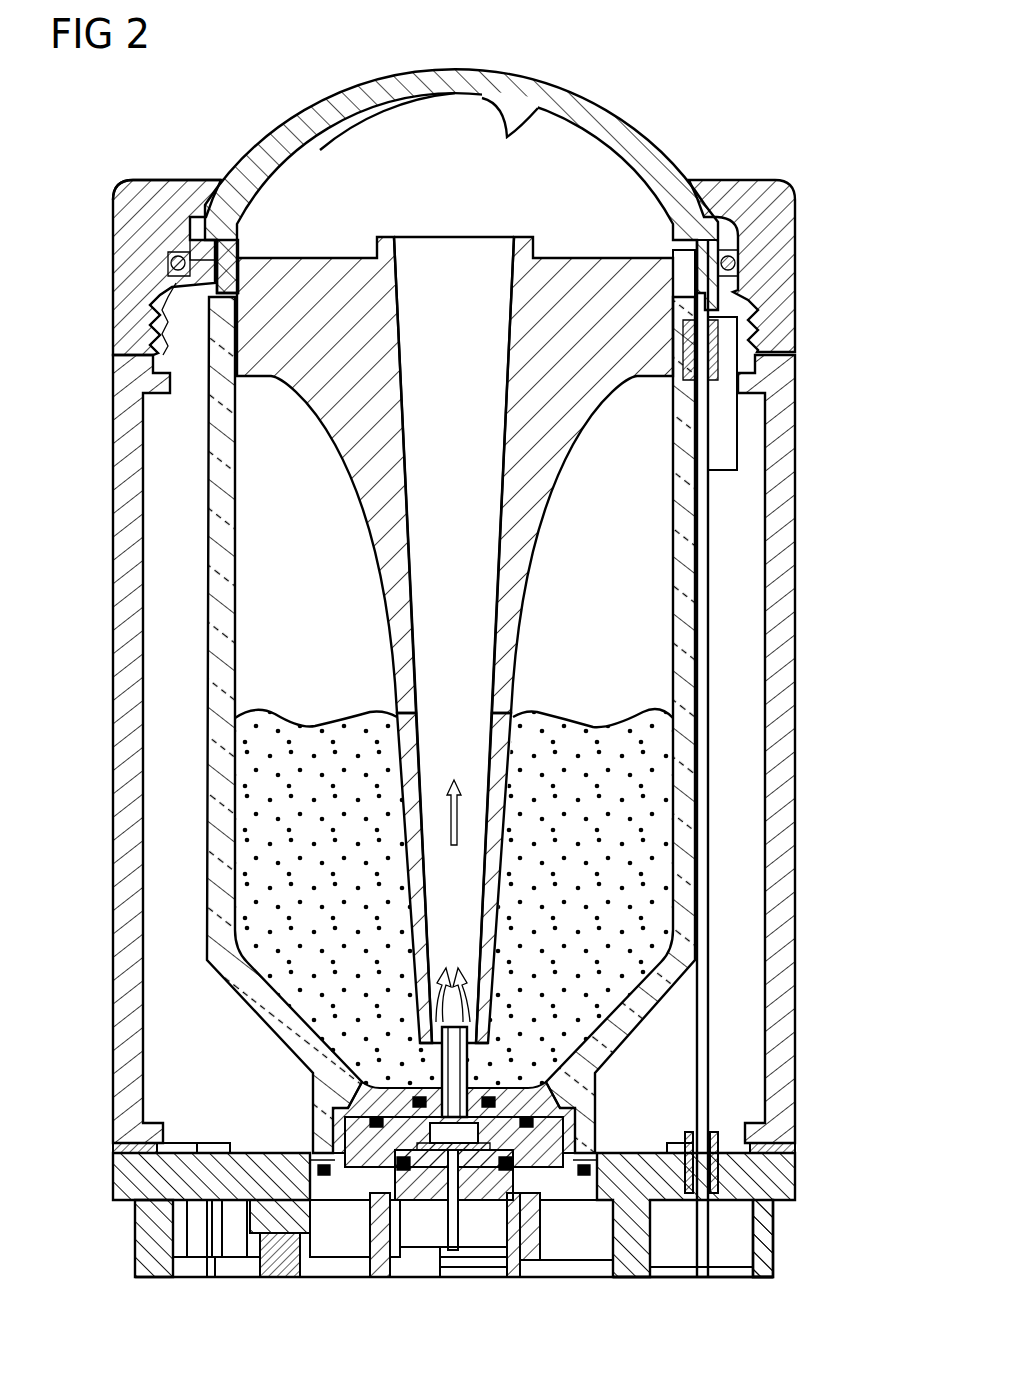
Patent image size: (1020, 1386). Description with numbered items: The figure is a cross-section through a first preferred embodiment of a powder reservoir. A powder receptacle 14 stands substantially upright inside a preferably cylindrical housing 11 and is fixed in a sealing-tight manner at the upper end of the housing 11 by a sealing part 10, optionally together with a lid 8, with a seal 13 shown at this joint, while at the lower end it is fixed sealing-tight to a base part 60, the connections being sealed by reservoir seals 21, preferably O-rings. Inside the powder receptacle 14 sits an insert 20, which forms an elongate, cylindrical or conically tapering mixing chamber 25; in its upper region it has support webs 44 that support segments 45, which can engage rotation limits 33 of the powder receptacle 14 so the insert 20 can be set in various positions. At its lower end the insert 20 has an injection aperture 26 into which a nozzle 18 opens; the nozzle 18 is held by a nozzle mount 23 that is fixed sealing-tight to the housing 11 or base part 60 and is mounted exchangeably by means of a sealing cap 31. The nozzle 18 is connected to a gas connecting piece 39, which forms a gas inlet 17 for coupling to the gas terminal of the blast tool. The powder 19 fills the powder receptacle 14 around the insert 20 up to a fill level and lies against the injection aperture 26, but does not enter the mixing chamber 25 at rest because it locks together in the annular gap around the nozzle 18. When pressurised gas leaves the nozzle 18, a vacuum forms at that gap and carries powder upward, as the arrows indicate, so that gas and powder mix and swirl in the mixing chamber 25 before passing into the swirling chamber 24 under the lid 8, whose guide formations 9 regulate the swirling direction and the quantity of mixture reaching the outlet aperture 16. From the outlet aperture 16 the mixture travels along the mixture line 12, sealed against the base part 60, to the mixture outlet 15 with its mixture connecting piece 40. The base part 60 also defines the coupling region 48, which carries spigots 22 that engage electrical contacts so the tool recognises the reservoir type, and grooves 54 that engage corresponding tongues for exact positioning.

The lid 8 is at (622, 132).
The guide formations 9 is at (520, 122).
The sealing part 10 is at (790, 258).
The housing 11 is at (790, 560).
The mixture line 12 is at (700, 1042).
The O-ring seal 13 is at (174, 263).
The powder receptacle 14 is at (225, 505).
The mixture outlet 15 is at (702, 1262).
The outlet aperture 16 is at (682, 242).
The gas inlet 17 is at (452, 1250).
The nozzle 18 is at (467, 1068).
The powder 19 is at (590, 735).
The insert 20 is at (403, 655).
The reservoir seals 21 is at (322, 1168).
The spigots 22 is at (280, 1270).
The nozzle mount 23 is at (535, 1228).
The swirling chamber 24 is at (443, 110).
The mixing chamber 25 is at (425, 572).
The injection aperture 26 is at (485, 992).
The sealing cap 31 is at (388, 1268).
The rotation limits 33 is at (210, 300).
The gas connecting piece 39 is at (455, 1225).
The mixture connecting piece 40 is at (706, 1246).
The support webs 44 is at (585, 405).
The segments 45 is at (228, 250).
The coupling region 48 is at (830, 1155).
The grooves 54 is at (125, 1222).
The base part 60 is at (112, 1180).